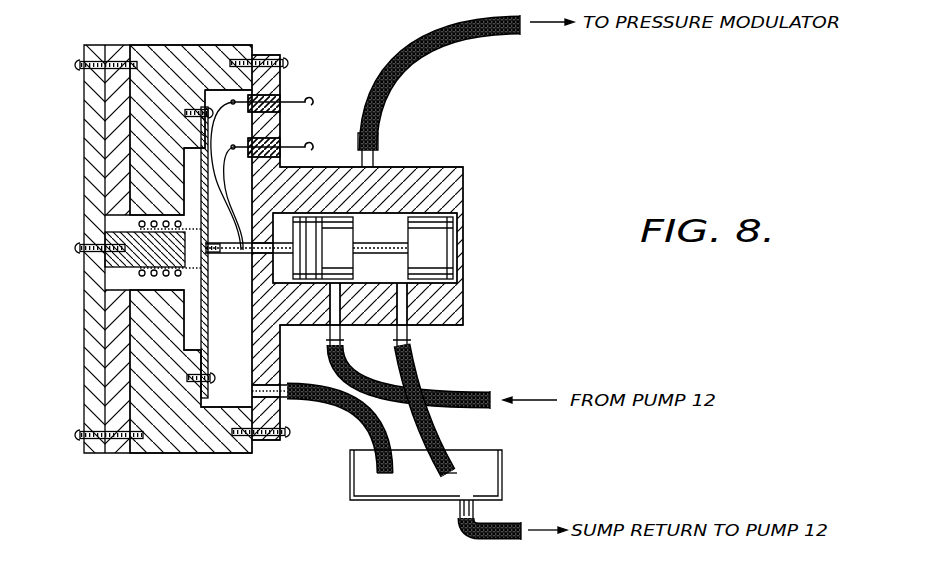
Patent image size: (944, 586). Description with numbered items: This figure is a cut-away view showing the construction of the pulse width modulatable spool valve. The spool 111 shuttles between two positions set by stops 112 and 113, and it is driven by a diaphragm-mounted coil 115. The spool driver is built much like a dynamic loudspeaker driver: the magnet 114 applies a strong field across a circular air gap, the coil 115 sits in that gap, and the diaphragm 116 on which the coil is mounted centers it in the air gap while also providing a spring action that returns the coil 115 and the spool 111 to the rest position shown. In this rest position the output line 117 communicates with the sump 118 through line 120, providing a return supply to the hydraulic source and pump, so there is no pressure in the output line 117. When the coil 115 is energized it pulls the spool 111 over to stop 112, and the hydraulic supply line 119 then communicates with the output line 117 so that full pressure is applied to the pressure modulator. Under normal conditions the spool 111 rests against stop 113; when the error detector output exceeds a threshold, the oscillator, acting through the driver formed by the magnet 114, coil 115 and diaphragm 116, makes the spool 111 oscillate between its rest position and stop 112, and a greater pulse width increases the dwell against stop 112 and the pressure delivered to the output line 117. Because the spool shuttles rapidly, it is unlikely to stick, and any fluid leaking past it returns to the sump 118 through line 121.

The spool 111 is at (440, 248).
The stop 112 is at (289, 212).
The stop 113 is at (463, 210).
The magnet 114 is at (118, 453).
The coil 115 is at (228, 192).
The diaphragm 116 is at (204, 327).
The output line 117 is at (465, 38).
The sump 118 is at (502, 470).
The hydraulic supply line 119 is at (448, 385).
The line 120 is at (452, 428).
The line 121 is at (355, 427).